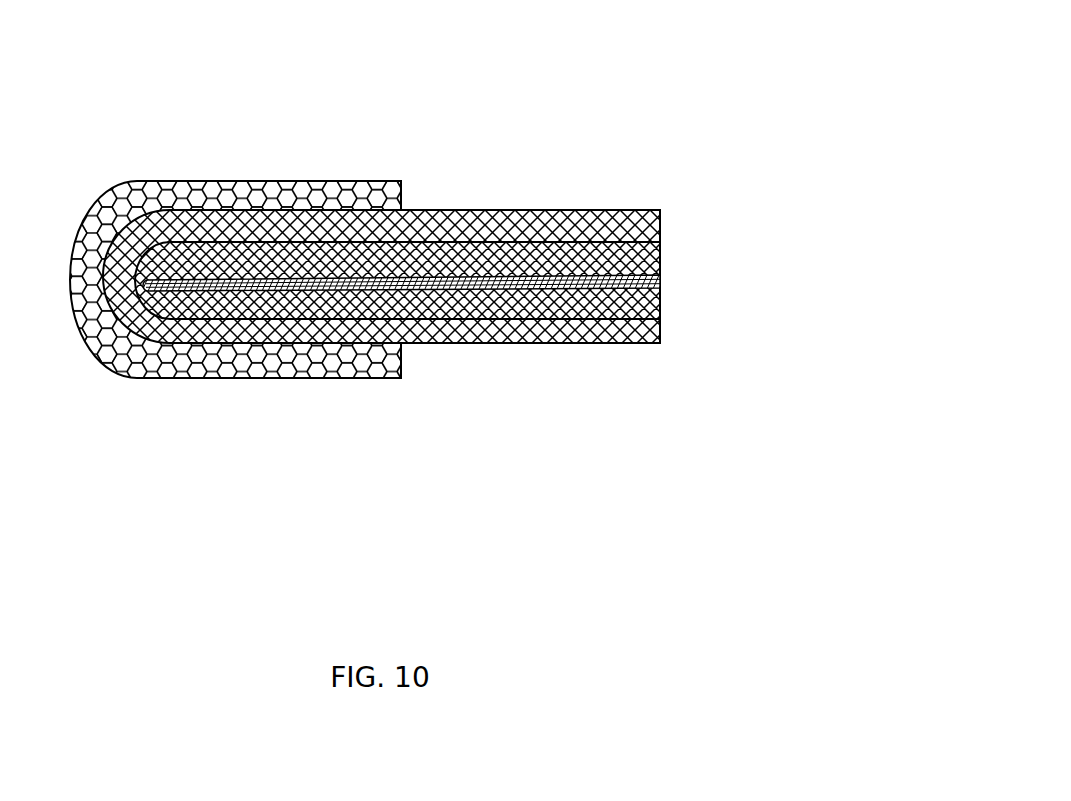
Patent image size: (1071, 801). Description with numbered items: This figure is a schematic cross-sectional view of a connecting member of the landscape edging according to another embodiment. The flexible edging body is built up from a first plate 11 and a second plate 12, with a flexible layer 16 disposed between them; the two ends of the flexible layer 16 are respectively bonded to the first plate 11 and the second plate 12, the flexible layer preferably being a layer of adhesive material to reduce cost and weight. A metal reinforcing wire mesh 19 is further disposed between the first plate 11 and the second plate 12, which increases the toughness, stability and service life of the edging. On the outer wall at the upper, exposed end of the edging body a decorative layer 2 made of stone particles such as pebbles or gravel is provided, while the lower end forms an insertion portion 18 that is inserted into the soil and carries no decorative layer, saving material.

The decorative layer 2 is at (347, 200).
The first plate 11 is at (625, 226).
The second plate 12 is at (613, 332).
The flexible layer 16 is at (642, 265).
The insertion portion 18 is at (532, 343).
The metal reinforcing wire mesh 19 is at (661, 282).